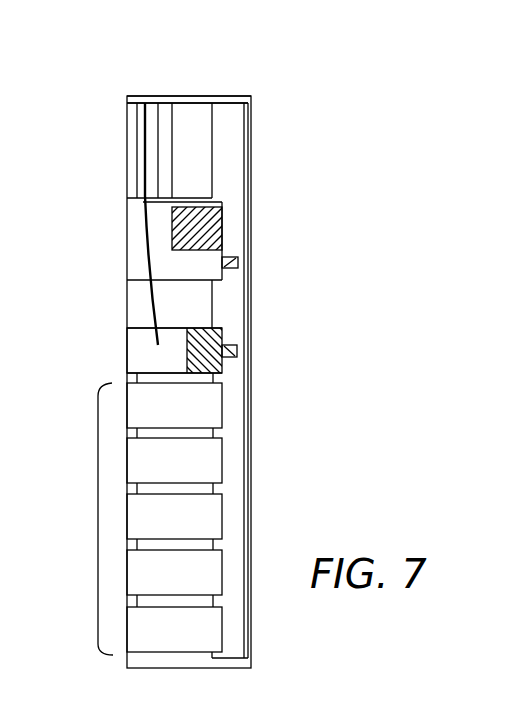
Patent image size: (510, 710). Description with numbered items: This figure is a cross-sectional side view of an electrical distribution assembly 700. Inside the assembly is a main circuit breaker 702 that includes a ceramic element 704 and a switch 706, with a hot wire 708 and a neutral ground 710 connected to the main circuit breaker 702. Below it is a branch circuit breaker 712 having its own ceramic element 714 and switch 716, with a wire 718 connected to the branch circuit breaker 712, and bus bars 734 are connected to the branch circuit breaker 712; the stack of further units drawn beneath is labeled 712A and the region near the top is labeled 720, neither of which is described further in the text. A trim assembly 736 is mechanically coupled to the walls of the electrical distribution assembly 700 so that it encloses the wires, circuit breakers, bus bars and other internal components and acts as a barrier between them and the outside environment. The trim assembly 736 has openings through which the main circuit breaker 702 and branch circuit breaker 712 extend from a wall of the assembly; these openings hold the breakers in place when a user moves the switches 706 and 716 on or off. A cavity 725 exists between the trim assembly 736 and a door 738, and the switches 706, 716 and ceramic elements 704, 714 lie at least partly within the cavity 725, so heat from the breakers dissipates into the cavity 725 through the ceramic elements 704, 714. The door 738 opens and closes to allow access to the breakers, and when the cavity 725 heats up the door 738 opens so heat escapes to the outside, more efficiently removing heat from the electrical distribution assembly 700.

The electrical distribution assembly 700 is at (109, 34).
The main circuit breaker 702 is at (182, 197).
The ceramic element 704 is at (222, 210).
The switch 706 is at (228, 257).
The hot wire 708 is at (176, 108).
The neutral ground 710 is at (137, 111).
The branch circuit breaker 712 is at (162, 327).
The stack of modules 712A is at (98, 520).
The ceramic element 714 is at (218, 328).
The switch 716 is at (237, 350).
The wire 718 is at (145, 303).
The cavity 720 is at (187, 117).
The cavity 725 is at (237, 112).
The bus bars 734 is at (138, 382).
The trim assembly 736 is at (205, 114).
The door 738 is at (252, 397).